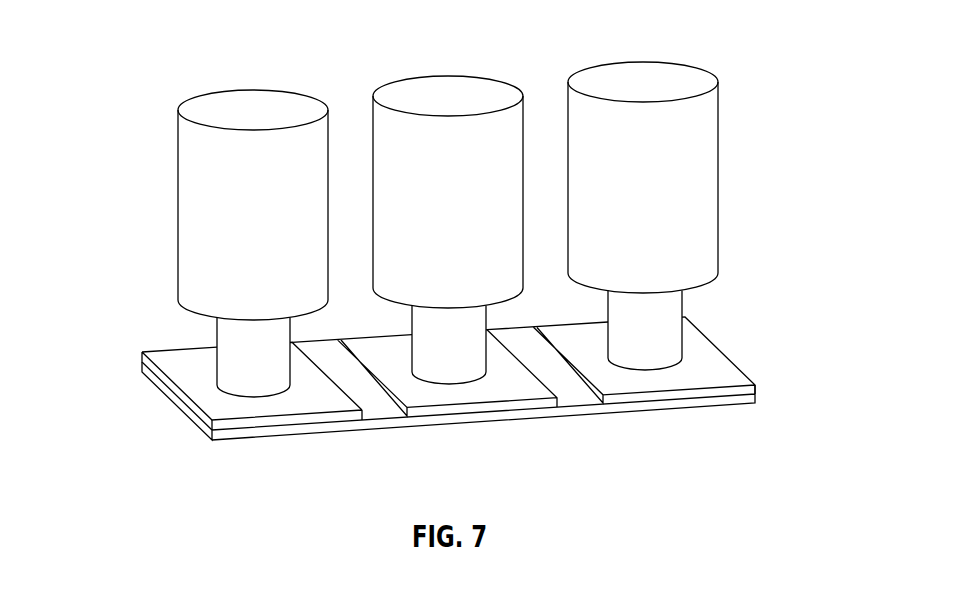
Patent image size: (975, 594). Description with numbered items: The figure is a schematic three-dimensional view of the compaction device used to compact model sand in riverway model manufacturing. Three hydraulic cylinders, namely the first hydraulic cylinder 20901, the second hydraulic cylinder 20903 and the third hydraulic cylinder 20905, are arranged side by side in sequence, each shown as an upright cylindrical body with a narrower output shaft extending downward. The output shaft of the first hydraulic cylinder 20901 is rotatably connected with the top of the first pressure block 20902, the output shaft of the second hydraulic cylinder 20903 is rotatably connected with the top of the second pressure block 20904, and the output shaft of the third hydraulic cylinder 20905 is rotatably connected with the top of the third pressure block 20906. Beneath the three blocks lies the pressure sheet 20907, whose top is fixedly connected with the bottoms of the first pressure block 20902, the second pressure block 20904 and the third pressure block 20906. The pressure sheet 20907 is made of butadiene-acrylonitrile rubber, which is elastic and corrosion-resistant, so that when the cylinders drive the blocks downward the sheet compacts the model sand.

The first hydraulic cylinder 20901 is at (273, 108).
The first pressure block 20902 is at (187, 364).
The second hydraulic cylinder 20903 is at (448, 85).
The second pressure block 20904 is at (410, 392).
The third hydraulic cylinder 20905 is at (675, 73).
The third pressure block 20906 is at (652, 377).
The pressure sheet 20907 is at (362, 423).